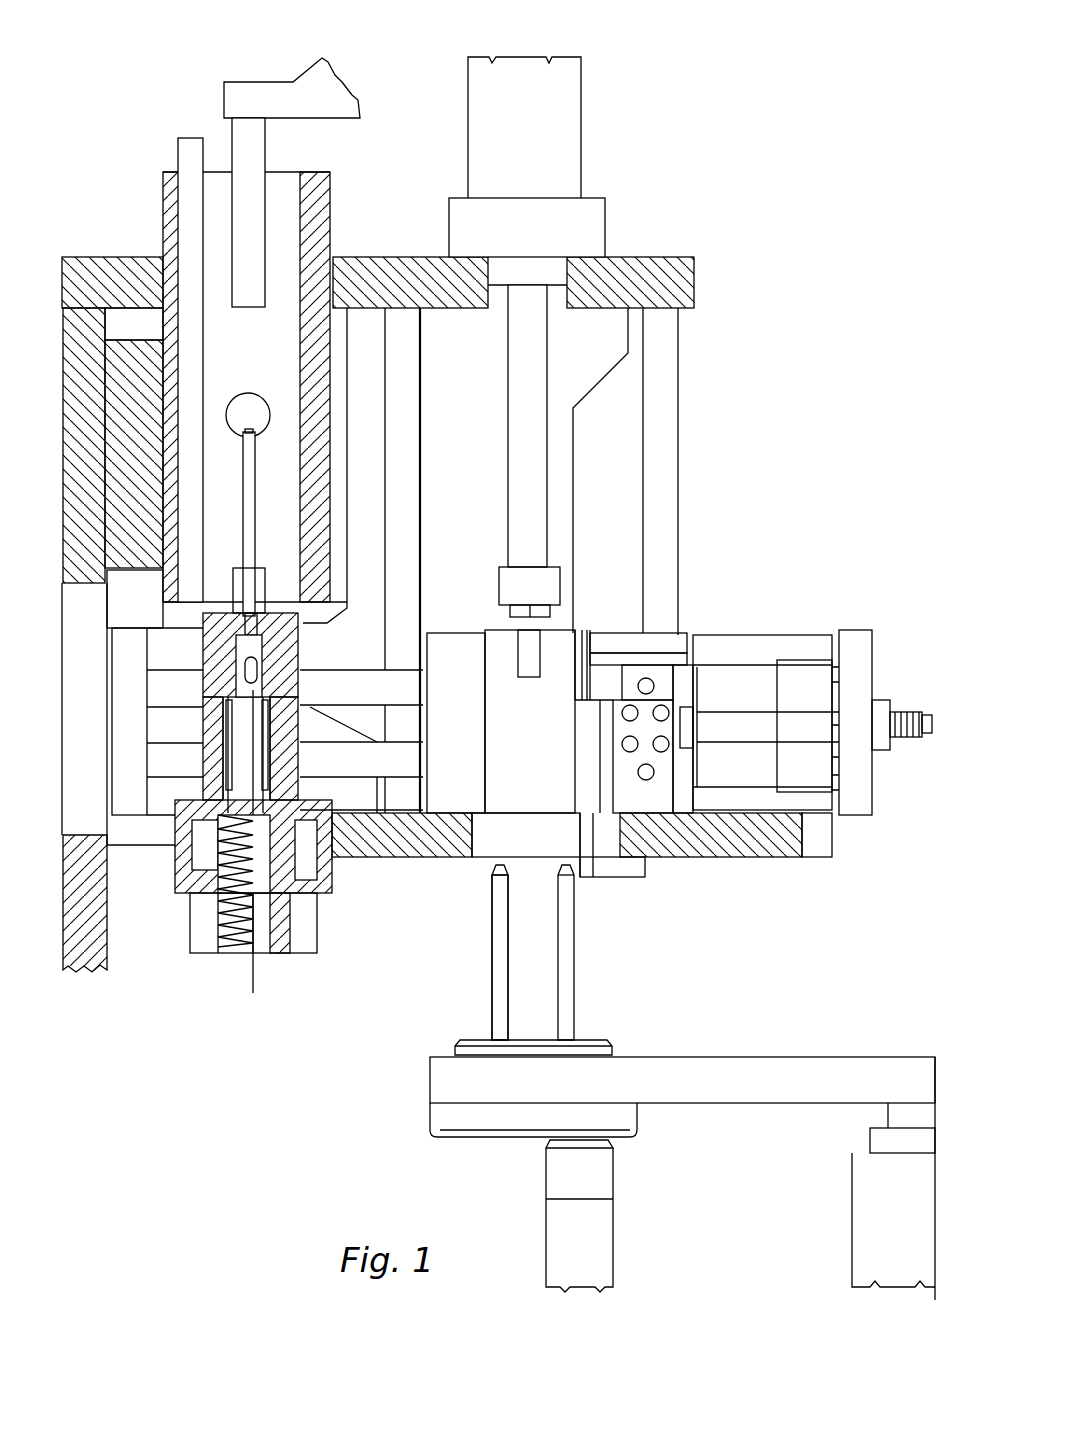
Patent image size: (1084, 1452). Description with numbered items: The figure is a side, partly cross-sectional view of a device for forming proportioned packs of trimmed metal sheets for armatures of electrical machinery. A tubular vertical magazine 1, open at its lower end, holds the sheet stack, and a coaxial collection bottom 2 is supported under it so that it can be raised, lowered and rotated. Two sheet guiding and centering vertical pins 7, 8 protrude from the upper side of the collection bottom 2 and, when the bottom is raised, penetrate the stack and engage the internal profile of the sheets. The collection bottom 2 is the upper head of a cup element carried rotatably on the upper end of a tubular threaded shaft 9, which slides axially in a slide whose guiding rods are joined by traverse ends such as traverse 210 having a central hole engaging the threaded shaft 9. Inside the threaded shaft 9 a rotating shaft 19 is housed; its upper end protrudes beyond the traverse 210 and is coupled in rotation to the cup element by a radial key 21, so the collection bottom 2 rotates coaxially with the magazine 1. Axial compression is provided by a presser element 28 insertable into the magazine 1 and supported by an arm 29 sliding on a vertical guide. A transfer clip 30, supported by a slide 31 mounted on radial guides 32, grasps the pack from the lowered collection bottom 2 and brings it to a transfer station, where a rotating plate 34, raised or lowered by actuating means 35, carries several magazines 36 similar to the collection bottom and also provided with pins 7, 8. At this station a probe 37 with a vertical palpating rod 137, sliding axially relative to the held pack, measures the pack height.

The vertical magazine 1 is at (335, 217).
The collection bottom 2 is at (283, 605).
The sheet guiding and centering vertical pin 7 is at (490, 966).
The sheet guiding and centering vertical pin 8 is at (247, 480).
The threaded shaft 9 is at (200, 958).
The rotating shaft 19 is at (303, 642).
The radial key 21 is at (215, 655).
The presser element 28 is at (252, 172).
The arm 29 is at (294, 90).
The transfer clip 30 is at (568, 627).
The slide 31 is at (769, 631).
The radial guides 32 is at (410, 753).
The rotating plate 34 is at (816, 1056).
The actuating means 35 is at (608, 1180).
The magazine 36 is at (606, 1038).
The probe 37 is at (585, 128).
The vertical palpating rod 137 is at (521, 357).
The traverse end 210 is at (178, 862).